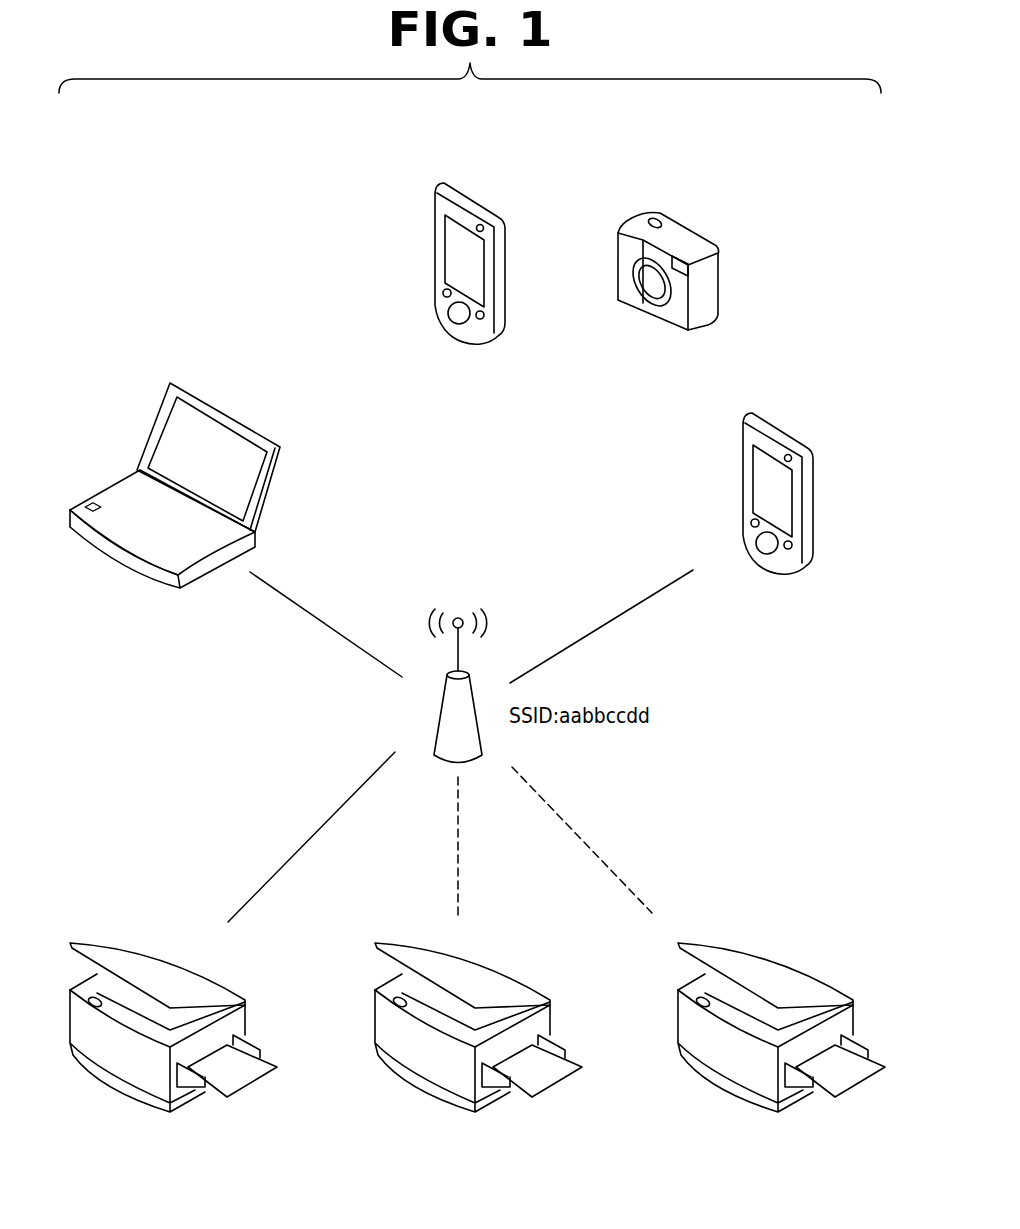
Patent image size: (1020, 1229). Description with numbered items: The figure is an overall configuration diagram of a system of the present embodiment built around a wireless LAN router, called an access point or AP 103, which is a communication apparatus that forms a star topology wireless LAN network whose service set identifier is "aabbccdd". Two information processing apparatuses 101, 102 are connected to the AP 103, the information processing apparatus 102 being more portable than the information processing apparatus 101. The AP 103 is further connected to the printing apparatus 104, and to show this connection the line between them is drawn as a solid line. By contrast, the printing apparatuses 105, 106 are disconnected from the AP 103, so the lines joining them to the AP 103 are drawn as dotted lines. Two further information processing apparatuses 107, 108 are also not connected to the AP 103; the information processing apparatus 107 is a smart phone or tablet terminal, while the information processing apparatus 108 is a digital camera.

The information processing apparatus 101 is at (233, 423).
The information processing apparatus 102 is at (783, 420).
The wireless LAN router (access point) 103 is at (480, 613).
The printing apparatus 104 is at (110, 940).
The printing apparatus 105 is at (483, 947).
The printing apparatus 106 is at (785, 947).
The information processing apparatus 107 is at (477, 194).
The information processing apparatus 108 is at (687, 227).